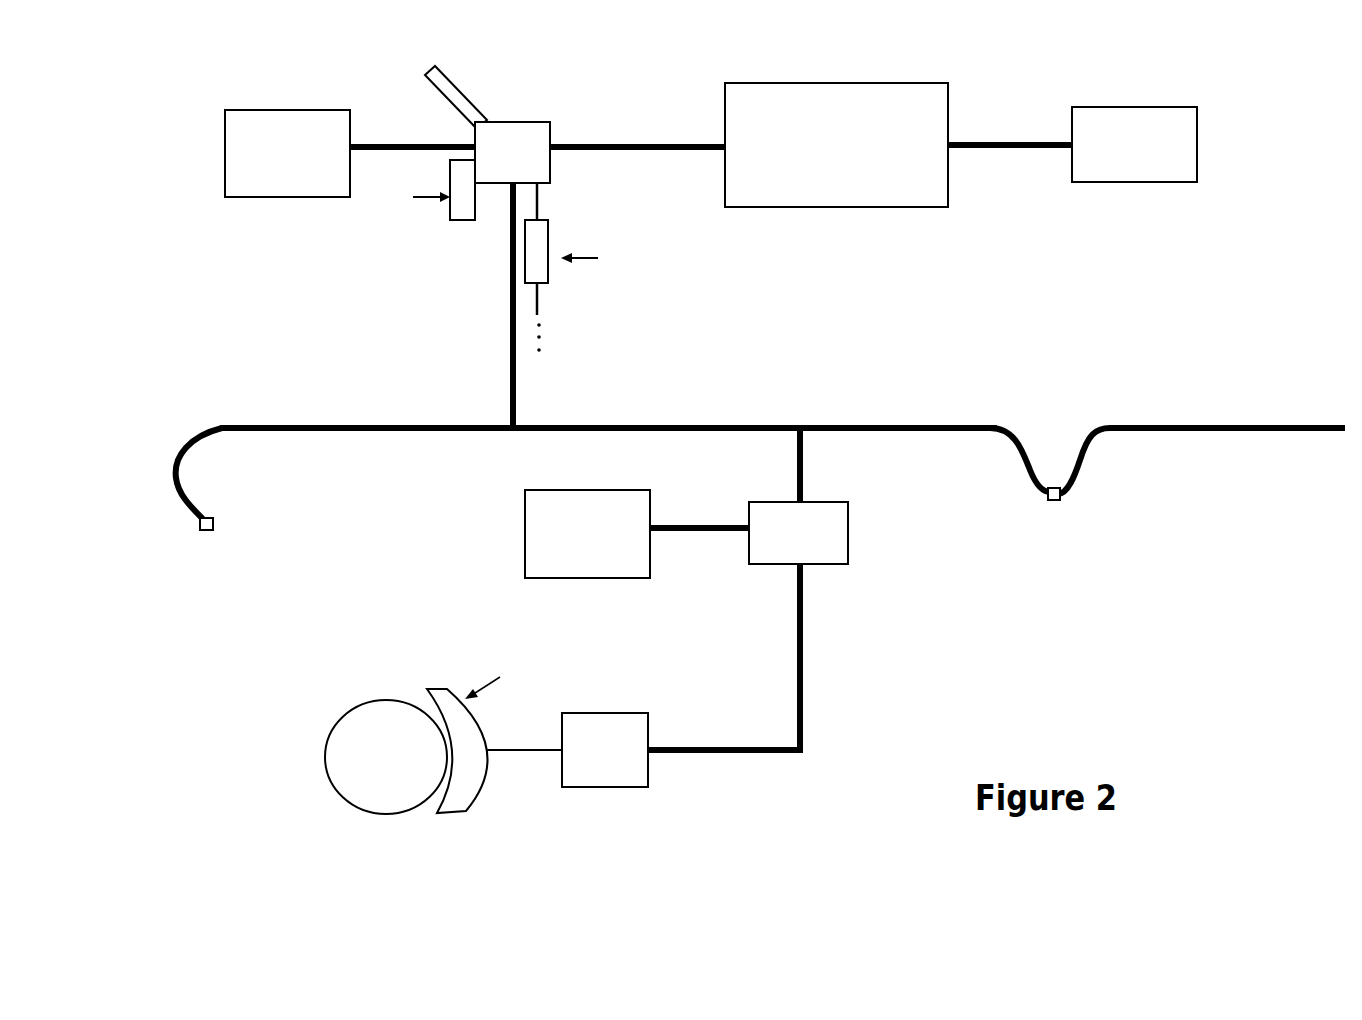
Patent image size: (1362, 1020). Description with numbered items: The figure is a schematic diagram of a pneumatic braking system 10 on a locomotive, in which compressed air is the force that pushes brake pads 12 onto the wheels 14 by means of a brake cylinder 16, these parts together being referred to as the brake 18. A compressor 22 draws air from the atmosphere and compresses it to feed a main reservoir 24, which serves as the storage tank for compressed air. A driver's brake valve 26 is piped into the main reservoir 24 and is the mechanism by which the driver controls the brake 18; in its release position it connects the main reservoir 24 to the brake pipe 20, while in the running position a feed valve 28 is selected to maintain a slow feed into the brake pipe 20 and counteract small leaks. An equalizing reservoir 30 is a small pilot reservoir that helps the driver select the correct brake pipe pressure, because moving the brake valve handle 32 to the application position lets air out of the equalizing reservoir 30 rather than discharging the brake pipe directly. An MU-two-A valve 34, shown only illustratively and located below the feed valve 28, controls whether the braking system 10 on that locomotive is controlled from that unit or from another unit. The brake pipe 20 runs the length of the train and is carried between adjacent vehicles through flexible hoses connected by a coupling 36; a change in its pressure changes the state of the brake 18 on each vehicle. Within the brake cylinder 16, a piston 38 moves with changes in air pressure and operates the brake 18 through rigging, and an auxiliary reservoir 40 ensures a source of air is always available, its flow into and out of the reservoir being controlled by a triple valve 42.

The braking system 10 is at (899, 308).
The brake pads 12 is at (475, 800).
The wheels 14 is at (362, 713).
The brake cylinder 16 is at (650, 775).
The brake 18 is at (632, 844).
The brake pipe 20 is at (840, 425).
The compressor 22 is at (1123, 182).
The main reservoir 24 is at (815, 83).
The driver's brake valve 26 is at (552, 133).
The feed valve 28 is at (463, 222).
The equalizing reservoir 30 is at (278, 110).
The brake valve handle 32 is at (426, 73).
The MU-2-A valve 34 is at (525, 257).
The coupling 36 is at (215, 520).
The piston 38 is at (513, 750).
The auxiliary reservoir 40 is at (523, 542).
The triple valve 42 is at (850, 540).